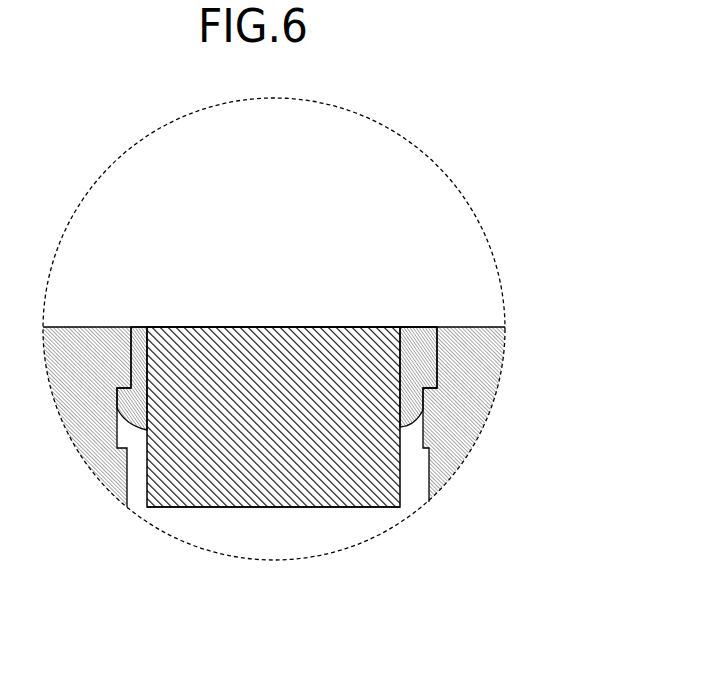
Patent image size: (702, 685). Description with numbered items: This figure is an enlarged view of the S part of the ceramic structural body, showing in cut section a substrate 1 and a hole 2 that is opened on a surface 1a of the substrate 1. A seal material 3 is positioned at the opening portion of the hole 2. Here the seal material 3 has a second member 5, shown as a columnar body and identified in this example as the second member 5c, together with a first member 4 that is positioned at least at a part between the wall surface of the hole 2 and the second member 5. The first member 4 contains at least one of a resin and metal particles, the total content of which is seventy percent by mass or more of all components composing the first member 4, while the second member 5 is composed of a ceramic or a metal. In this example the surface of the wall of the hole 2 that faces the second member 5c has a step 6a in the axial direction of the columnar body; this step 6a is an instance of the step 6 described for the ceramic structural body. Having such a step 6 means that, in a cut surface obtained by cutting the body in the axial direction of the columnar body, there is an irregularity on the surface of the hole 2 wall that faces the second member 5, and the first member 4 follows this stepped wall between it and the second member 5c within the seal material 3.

The substrate 1 is at (92, 413).
The surface of substrate 1a is at (477, 332).
The hole 2 is at (263, 533).
The seal material 3 is at (347, 338).
The first member 4 is at (137, 363).
The second member 5 is at (273, 372).
The second member 5c is at (225, 358).
The step 6 is at (488, 409).
The step 6a is at (427, 390).
The S part S is at (392, 130).